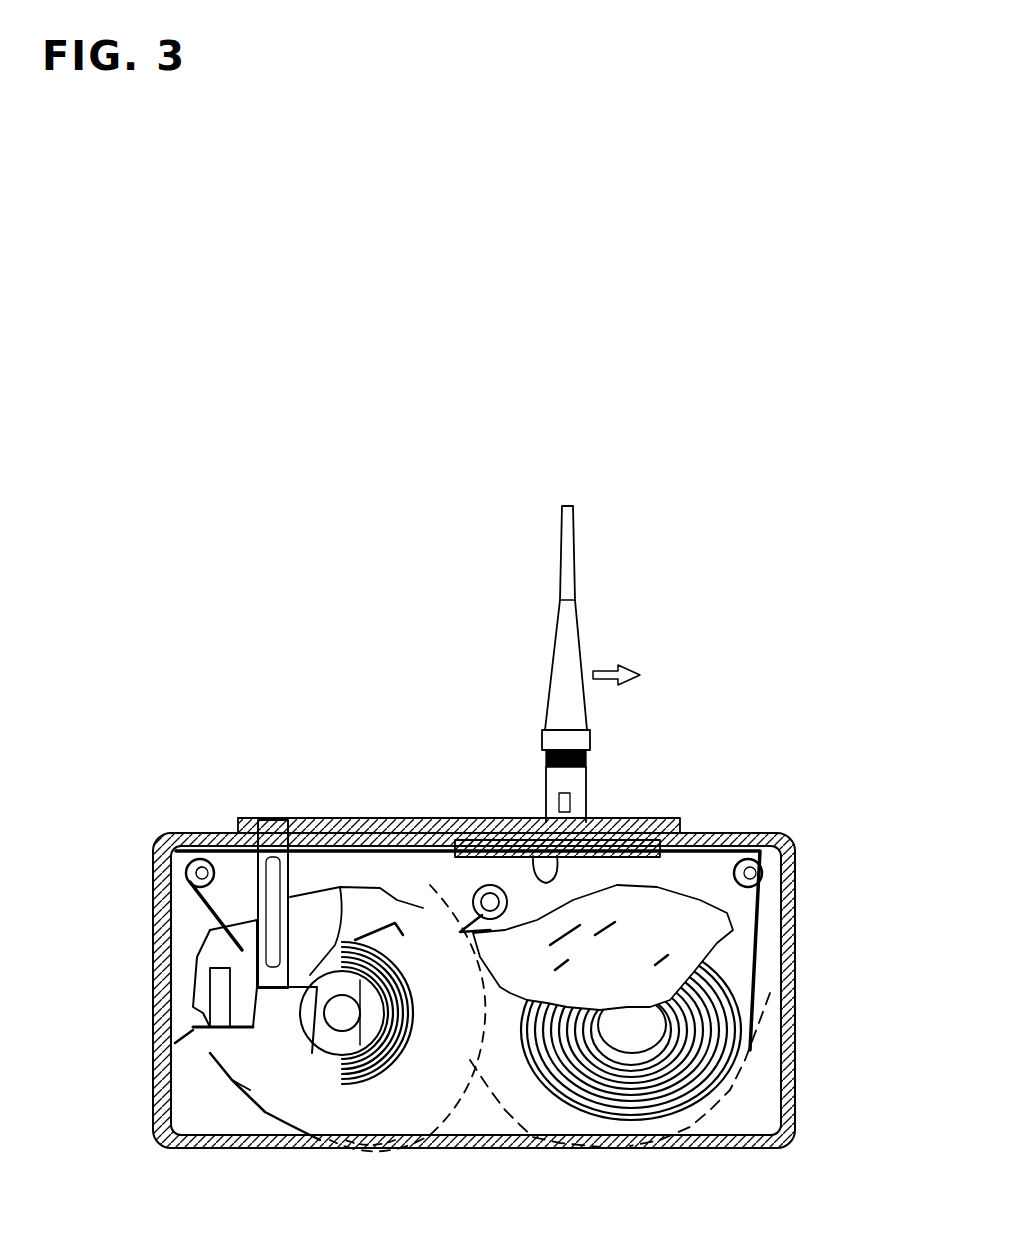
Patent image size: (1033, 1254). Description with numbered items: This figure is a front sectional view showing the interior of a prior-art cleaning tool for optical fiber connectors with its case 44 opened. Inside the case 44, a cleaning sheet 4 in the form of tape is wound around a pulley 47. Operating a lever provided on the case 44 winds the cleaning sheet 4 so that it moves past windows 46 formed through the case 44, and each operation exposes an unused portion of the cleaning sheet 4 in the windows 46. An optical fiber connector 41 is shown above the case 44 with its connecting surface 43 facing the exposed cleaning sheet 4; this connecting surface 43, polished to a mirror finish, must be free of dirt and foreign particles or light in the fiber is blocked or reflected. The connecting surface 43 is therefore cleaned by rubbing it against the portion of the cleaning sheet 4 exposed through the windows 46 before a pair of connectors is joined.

The cleaning sheet 4 is at (626, 1105).
The optical fiber connector 41 is at (612, 772).
The connecting surface 43 is at (524, 818).
The case 44 is at (794, 998).
The windows 46 is at (628, 816).
The pulley 47 is at (382, 1105).